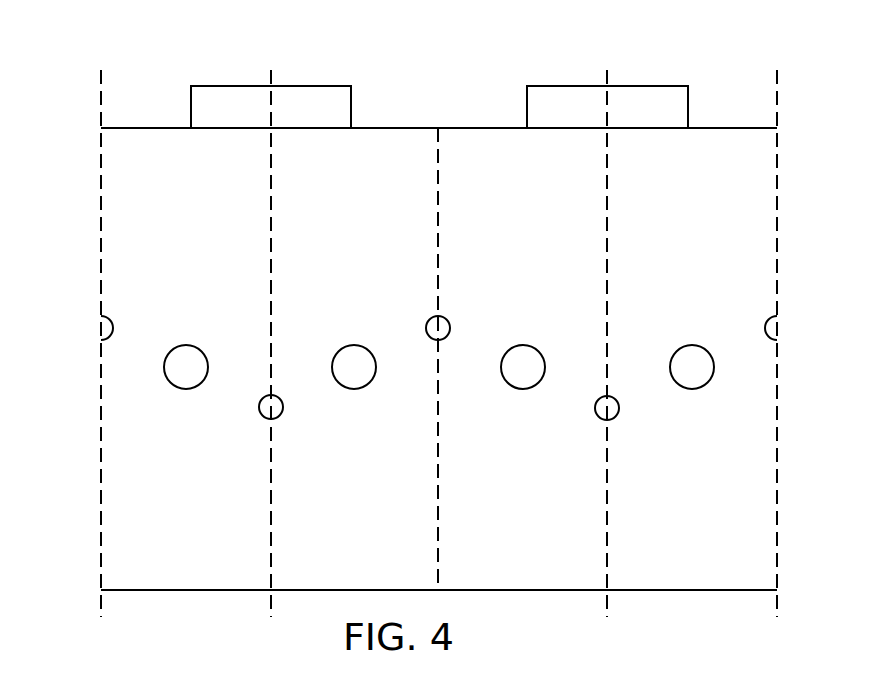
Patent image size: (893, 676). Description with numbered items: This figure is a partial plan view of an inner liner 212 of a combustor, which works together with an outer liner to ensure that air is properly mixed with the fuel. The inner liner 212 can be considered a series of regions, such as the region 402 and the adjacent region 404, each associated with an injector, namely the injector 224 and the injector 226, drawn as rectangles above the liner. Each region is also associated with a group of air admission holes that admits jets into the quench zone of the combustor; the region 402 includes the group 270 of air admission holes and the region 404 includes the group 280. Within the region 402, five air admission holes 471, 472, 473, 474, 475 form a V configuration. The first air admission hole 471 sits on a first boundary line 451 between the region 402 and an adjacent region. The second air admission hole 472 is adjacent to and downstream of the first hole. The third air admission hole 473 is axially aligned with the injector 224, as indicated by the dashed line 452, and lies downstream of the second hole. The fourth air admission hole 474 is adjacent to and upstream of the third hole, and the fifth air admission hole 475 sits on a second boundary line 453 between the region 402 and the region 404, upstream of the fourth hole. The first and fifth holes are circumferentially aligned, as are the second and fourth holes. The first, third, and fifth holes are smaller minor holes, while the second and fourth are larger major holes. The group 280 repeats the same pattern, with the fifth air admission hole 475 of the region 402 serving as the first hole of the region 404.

The inner liner 212 is at (402, 318).
The injector 224 is at (218, 89).
The injector 226 is at (563, 86).
The group of air admission holes 270 is at (199, 496).
The group of air admission holes 280 is at (523, 463).
The region 402 is at (148, 134).
The region 404 is at (493, 131).
The first boundary line 451 is at (102, 193).
The dashed line 452 is at (271, 208).
The second boundary line 453 is at (437, 180).
The first air admission hole 471 is at (112, 319).
The second air admission hole 472 is at (177, 389).
The third air admission hole 473 is at (278, 418).
The fourth air admission hole 474 is at (364, 389).
The fifth air admission hole 475 is at (451, 323).